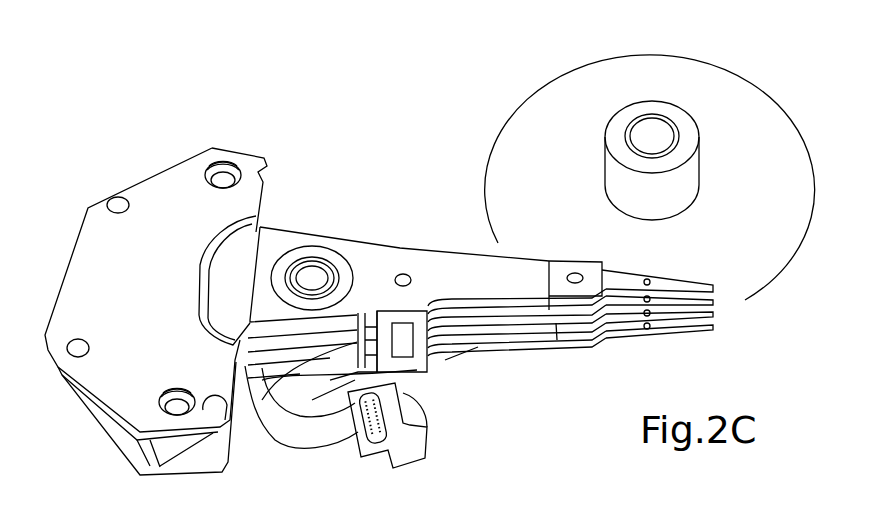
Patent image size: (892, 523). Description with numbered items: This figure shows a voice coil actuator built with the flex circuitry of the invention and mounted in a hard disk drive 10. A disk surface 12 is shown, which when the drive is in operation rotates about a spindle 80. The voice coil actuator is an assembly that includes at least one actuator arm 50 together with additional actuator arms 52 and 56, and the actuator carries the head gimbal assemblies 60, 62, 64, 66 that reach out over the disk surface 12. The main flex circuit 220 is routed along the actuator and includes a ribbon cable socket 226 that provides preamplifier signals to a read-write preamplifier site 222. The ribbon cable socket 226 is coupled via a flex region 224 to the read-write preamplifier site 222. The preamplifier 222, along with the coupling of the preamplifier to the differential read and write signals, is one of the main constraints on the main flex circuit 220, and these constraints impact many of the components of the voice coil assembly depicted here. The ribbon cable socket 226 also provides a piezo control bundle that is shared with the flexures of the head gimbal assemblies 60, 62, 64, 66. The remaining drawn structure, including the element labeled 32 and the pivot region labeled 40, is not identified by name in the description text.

The hard disk drive 10 is at (44, 61).
The disk surface 12 is at (778, 122).
The spindle 80 is at (688, 177).
The actuator 32 is at (227, 288).
The pivot bearing 40 is at (315, 268).
The actuator arm 50 is at (495, 268).
The actuator arm 52 is at (567, 313).
The actuator arm 56 is at (523, 337).
The head gimbal assembly 60 is at (687, 283).
The head gimbal assembly 62 is at (720, 313).
The head gimbal assembly 64 is at (690, 312).
The head gimbal assembly 66 is at (673, 325).
The main flex circuit 220 is at (410, 365).
The read-write preamplifier site 222 is at (401, 332).
The flex region 224 is at (302, 438).
The ribbon cable socket 226 is at (400, 457).